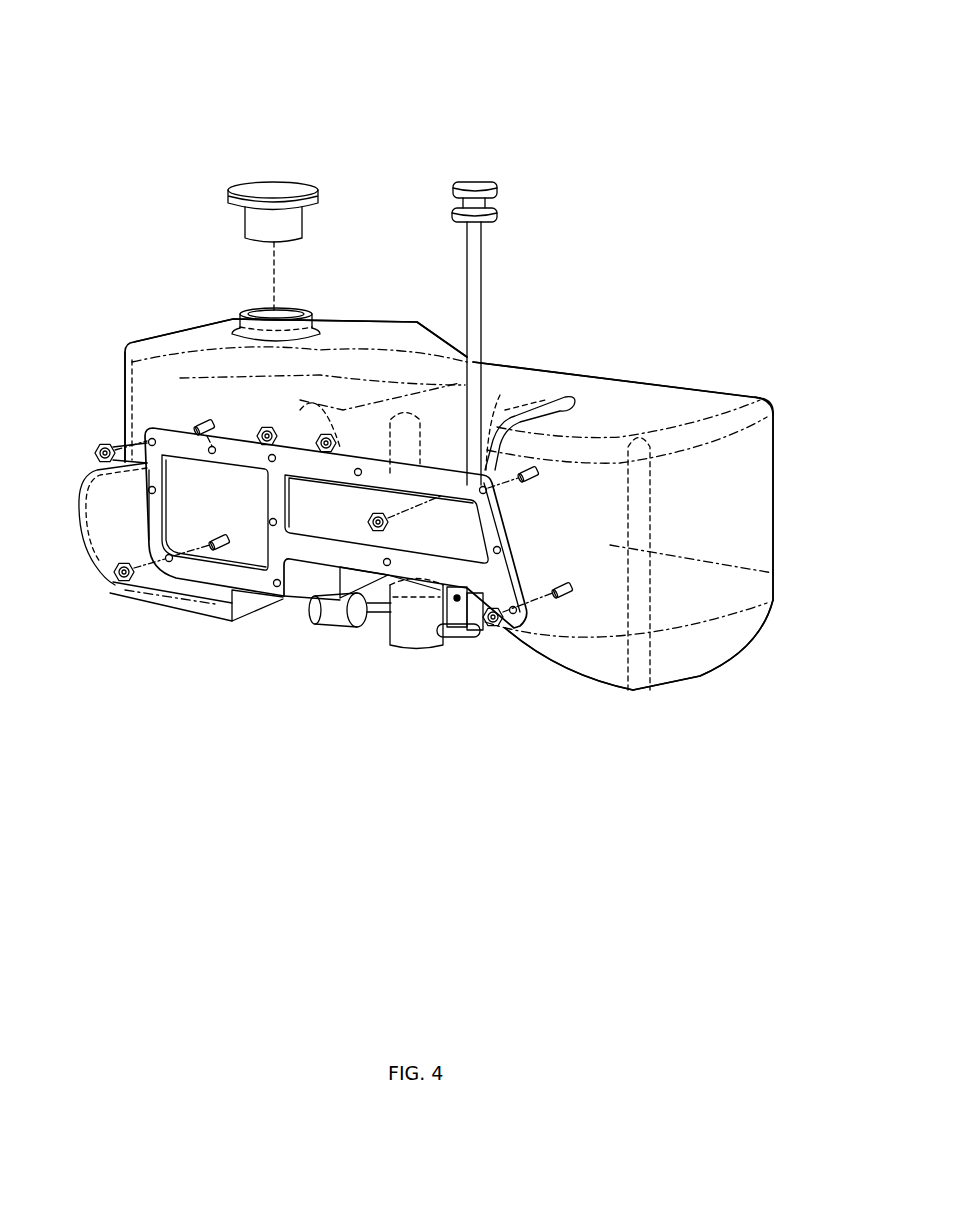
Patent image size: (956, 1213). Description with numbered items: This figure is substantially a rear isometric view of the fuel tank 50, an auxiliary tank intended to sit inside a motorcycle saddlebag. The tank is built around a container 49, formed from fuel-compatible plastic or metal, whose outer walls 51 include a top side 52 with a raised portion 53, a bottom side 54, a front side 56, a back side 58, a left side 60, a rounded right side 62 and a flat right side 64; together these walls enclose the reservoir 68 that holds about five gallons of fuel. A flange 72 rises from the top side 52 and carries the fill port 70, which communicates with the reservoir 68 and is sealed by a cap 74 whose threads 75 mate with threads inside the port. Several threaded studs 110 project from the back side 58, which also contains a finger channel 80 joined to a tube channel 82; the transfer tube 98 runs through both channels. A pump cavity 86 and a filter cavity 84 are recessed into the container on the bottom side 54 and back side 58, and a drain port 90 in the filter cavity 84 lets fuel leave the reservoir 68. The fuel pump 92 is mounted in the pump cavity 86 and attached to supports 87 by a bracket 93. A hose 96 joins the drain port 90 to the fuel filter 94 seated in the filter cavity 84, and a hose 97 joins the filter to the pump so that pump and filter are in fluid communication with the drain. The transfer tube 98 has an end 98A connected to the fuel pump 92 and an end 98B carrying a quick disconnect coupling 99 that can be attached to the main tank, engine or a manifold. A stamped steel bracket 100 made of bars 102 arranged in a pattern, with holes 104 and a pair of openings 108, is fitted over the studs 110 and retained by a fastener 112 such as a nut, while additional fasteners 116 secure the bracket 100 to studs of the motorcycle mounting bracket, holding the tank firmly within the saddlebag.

The container 49 is at (770, 392).
The fuel tank 50 is at (250, 66).
The outer walls 51 is at (752, 483).
The top side 52 is at (628, 405).
The raised portion 53 is at (322, 345).
The bottom side 54 is at (615, 687).
The front side 56 is at (775, 410).
The back side 58 is at (733, 577).
The left side 60 is at (757, 433).
The rounded right side 62 is at (87, 557).
The flat right side 64 is at (127, 413).
The reservoir 68 is at (232, 395).
The fill port 70 is at (270, 313).
The flange 72 is at (240, 320).
The cap 74 is at (297, 180).
The threads 75 is at (258, 230).
The finger channel 80 is at (513, 417).
The tube channel 82 is at (483, 437).
The filter cavity 84 is at (298, 625).
The pump cavity 86 is at (381, 620).
The supports 87 is at (463, 633).
The drain port 90 is at (233, 617).
The fuel pump 92 is at (417, 650).
The bracket 93 is at (440, 602).
The fuel filter 94 is at (335, 600).
The hose 96 is at (290, 630).
The hose 97 is at (387, 580).
The transfer tube 98 is at (483, 637).
The end 98A is at (450, 633).
The end 98B is at (483, 252).
The quick disconnect coupling 99 is at (495, 178).
The bracket 100 is at (132, 418).
The bars 102 is at (147, 464).
The holes 104 is at (148, 489).
The openings 108 is at (213, 535).
The threaded studs 110 is at (570, 592).
The fastener 112 is at (98, 448).
The fasteners 116 is at (327, 435).